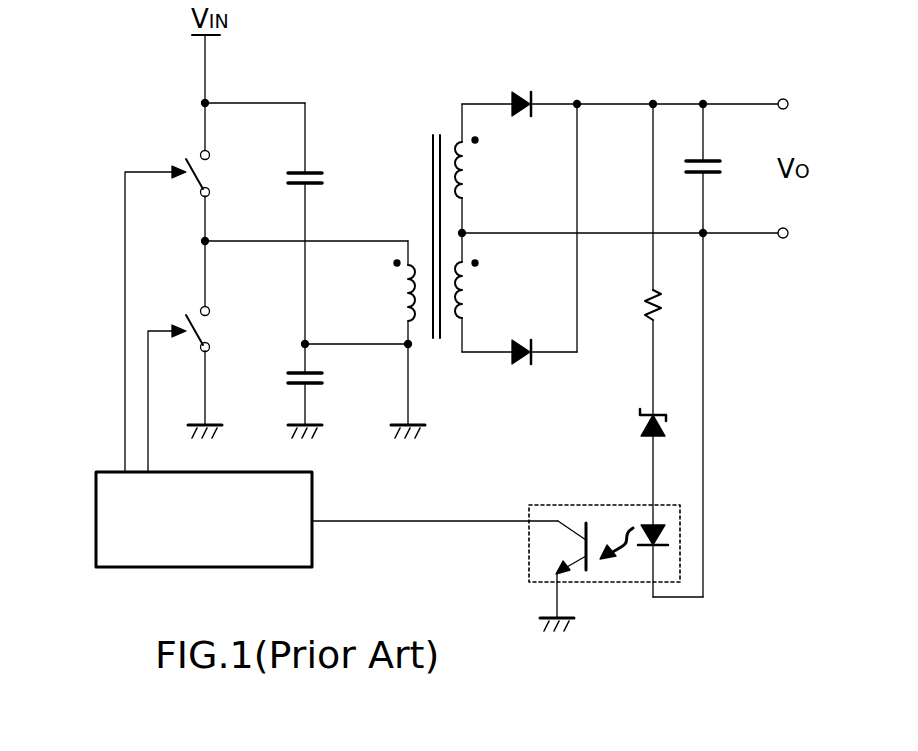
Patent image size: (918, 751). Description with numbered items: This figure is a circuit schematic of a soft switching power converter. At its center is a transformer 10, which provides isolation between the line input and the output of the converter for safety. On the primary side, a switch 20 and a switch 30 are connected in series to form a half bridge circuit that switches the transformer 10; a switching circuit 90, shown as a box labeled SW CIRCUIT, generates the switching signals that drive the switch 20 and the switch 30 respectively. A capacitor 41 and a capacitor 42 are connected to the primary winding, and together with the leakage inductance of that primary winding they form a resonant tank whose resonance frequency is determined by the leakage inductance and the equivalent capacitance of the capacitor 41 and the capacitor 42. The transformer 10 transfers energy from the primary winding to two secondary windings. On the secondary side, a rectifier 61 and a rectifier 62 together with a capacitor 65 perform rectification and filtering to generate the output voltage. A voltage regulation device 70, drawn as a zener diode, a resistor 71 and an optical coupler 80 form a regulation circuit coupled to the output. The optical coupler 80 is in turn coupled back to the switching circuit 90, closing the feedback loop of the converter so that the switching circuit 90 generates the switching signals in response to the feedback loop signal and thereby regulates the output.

The transformer 10 is at (432, 128).
The switch 20 is at (215, 170).
The switch 30 is at (215, 327).
The capacitor 41 is at (323, 176).
The capacitor 42 is at (323, 376).
The rectifier 61 is at (522, 92).
The rectifier 62 is at (522, 366).
The capacitor 65 is at (721, 166).
The voltage regulation device 70 is at (642, 422).
The resistor 71 is at (642, 298).
The optical coupler 80 is at (526, 536).
The switching circuit 90 is at (88, 515).